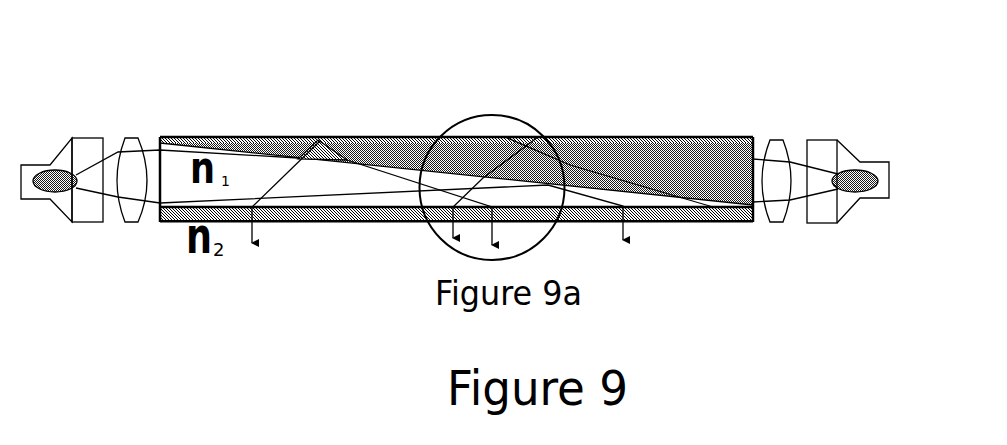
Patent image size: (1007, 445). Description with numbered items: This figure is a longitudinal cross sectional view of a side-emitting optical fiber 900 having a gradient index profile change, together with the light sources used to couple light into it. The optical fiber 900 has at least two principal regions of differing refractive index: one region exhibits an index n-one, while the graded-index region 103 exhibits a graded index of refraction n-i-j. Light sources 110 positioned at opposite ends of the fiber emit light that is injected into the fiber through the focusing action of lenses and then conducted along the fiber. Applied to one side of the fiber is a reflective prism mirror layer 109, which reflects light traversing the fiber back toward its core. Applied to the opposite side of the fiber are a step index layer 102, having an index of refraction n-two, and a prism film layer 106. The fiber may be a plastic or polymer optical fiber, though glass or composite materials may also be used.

The optical fiber 900 is at (456, 167).
The graded-index region 103 is at (662, 138).
The reflective prism mirror layer 109 is at (180, 138).
The step index layer 102 is at (160, 218).
The prism film layer 106 is at (733, 222).
The light sources 110 is at (813, 138).